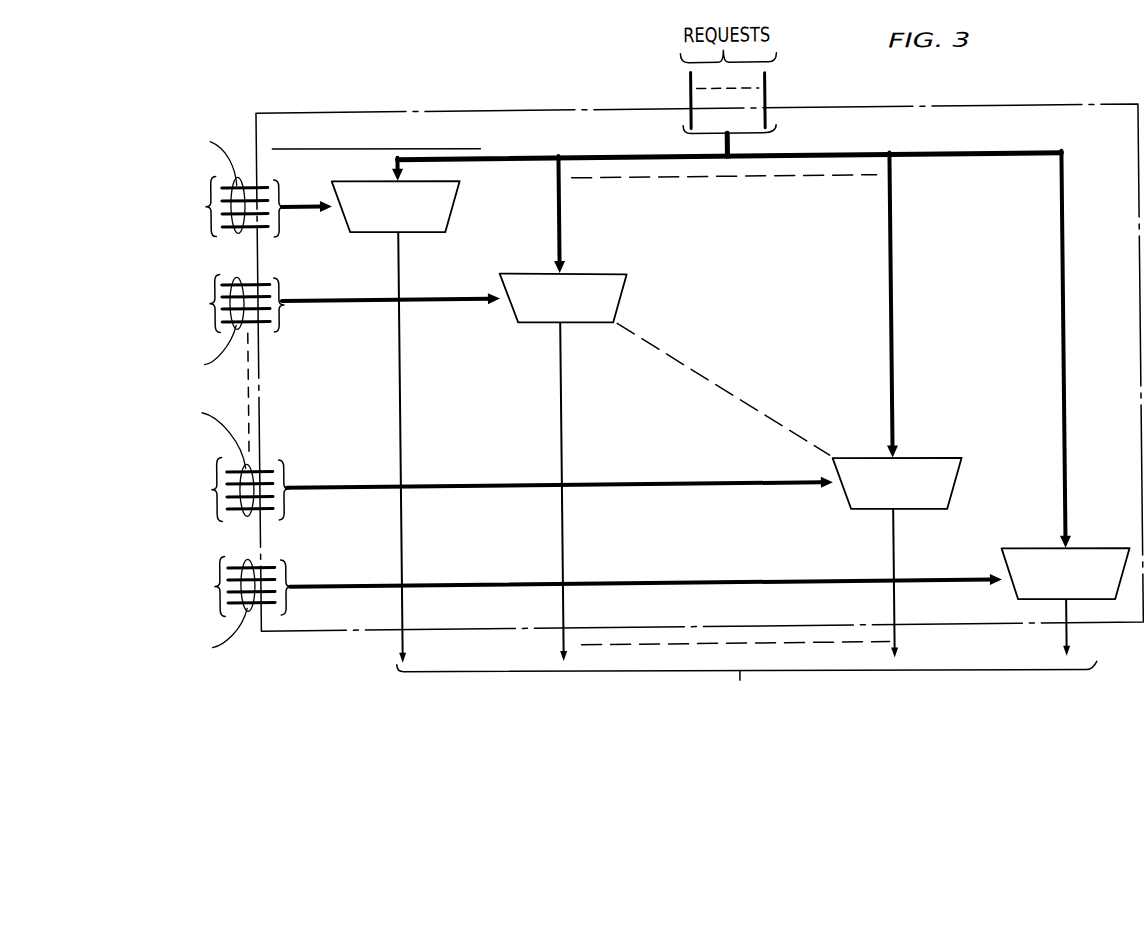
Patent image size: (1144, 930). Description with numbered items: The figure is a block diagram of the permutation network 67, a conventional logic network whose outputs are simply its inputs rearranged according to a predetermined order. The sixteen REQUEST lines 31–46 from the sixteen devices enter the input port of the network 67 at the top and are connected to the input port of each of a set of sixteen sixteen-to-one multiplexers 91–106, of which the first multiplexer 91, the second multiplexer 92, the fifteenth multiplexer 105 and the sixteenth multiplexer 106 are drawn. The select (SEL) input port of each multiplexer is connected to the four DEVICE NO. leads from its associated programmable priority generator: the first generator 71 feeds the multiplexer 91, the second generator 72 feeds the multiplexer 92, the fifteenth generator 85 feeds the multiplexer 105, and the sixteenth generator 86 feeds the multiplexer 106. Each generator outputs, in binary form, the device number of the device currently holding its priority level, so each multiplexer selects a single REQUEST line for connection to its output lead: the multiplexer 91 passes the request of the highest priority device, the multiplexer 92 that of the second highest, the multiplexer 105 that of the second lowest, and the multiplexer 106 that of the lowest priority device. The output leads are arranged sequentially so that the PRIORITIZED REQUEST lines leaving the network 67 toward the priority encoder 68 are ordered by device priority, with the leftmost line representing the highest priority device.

The permutation network 67 is at (429, 110).
The REQUEST line 31 is at (694, 91).
The REQUEST line 46 is at (768, 92).
The sixteen-to-one multiplexer 91 is at (454, 209).
The sixteen-to-one multiplexer 92 is at (609, 275).
The sixteen-to-one multiplexer 105 is at (941, 466).
The sixteen-to-one multiplexer 106 is at (1098, 561).
The programmable priority generator 71 is at (204, 175).
The programmable priority generator 72 is at (294, 333).
The programmable priority generator 85 is at (460, 458).
The programmable priority generator 86 is at (552, 611).
The priority encoder 68 is at (747, 723).